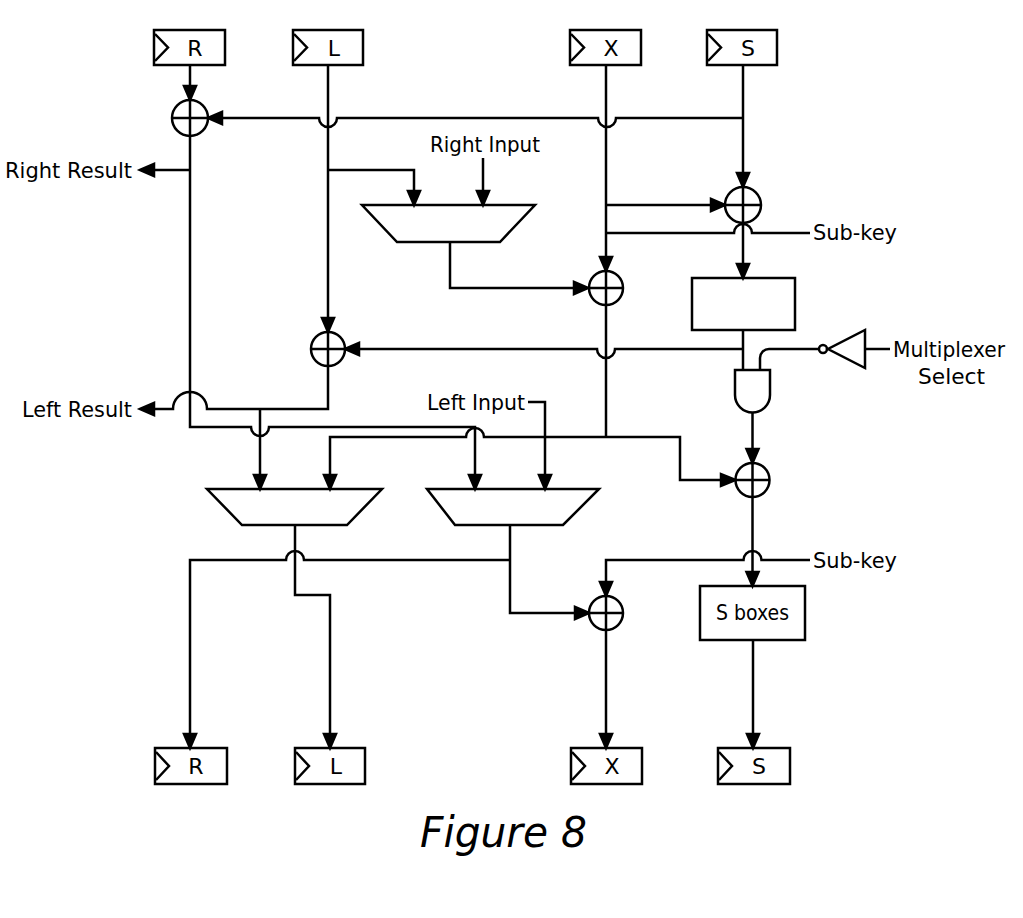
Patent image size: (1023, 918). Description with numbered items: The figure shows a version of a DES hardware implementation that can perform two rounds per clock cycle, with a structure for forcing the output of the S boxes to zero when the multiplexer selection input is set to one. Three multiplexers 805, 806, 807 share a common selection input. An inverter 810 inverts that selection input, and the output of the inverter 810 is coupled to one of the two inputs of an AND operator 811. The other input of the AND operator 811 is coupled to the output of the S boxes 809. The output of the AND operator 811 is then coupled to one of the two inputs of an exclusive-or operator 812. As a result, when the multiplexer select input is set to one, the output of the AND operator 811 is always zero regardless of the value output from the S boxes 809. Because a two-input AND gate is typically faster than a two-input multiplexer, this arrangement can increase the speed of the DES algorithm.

The multiplexer 805 is at (526, 205).
The multiplexer 806 is at (362, 489).
The multiplexer 807 is at (587, 489).
The S boxes 809 is at (780, 278).
The inverter 810 is at (869, 331).
The AND operator 811 is at (770, 395).
The exclusive-or operator 812 is at (770, 482).